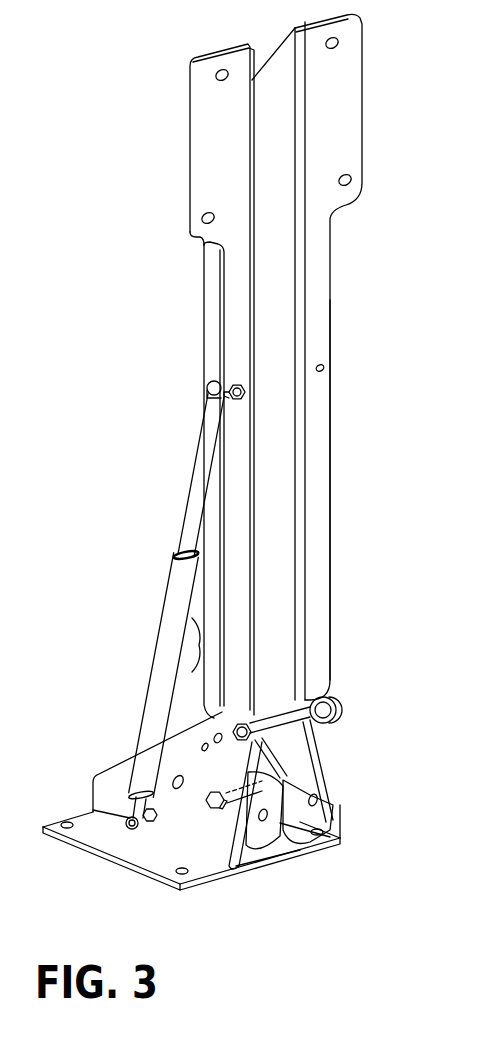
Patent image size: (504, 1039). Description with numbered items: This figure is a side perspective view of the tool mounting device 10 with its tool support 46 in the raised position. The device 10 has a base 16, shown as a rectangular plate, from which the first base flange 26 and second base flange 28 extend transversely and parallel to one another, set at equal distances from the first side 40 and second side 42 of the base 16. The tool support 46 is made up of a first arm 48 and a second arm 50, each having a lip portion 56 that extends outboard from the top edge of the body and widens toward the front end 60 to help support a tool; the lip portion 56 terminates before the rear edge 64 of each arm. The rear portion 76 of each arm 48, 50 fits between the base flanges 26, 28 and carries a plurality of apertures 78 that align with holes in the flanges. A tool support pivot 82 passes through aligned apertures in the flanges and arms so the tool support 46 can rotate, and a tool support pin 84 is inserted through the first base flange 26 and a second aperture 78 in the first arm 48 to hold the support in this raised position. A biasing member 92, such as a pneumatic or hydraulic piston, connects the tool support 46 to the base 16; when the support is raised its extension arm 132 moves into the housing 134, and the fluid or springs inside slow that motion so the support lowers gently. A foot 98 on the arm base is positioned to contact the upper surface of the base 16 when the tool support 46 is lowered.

The tool mounting device 10 is at (348, 368).
The base 16 is at (263, 863).
The first base flange 26 is at (225, 850).
The second base flange 28 is at (297, 847).
The first side 40 is at (157, 877).
The second side 42 is at (330, 825).
The tool support 46 is at (220, 283).
The first arm 48 is at (210, 392).
The second arm 50 is at (322, 450).
The lip portion 56 is at (190, 168).
The front end 60 is at (182, 120).
The rear edge 64 is at (312, 840).
The rear portion 76 is at (327, 750).
The apertures 78 is at (270, 777).
The tool support pivot 82 is at (227, 807).
The tool support pin 84 is at (332, 707).
The biasing member 92 is at (163, 577).
The foot 98 is at (190, 655).
The extension arm 132 is at (200, 477).
The housing 134 is at (150, 718).